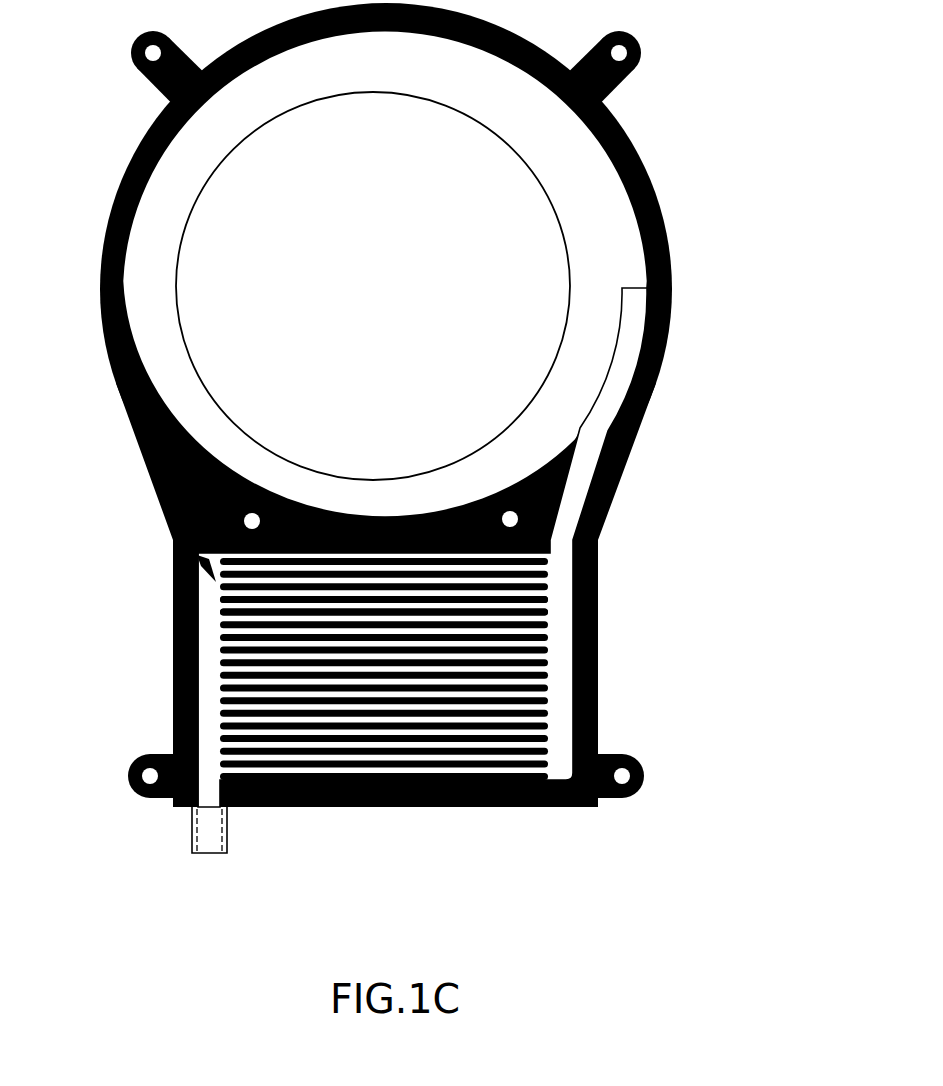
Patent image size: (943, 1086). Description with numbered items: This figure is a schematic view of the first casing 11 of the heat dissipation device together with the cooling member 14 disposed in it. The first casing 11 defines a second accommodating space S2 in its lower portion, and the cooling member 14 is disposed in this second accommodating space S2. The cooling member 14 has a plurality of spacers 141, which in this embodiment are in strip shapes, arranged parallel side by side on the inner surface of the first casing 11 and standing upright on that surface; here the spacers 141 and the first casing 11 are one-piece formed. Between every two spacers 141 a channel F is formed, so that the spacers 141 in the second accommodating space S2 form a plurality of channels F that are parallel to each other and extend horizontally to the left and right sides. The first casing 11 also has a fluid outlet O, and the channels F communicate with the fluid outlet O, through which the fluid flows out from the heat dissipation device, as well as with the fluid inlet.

The first casing 11 is at (116, 170).
The second accommodating space S2 is at (173, 548).
The cooling member 14 is at (299, 669).
The spacers 141 is at (222, 668).
The channel F is at (560, 604).
The fluid outlet O is at (211, 845).